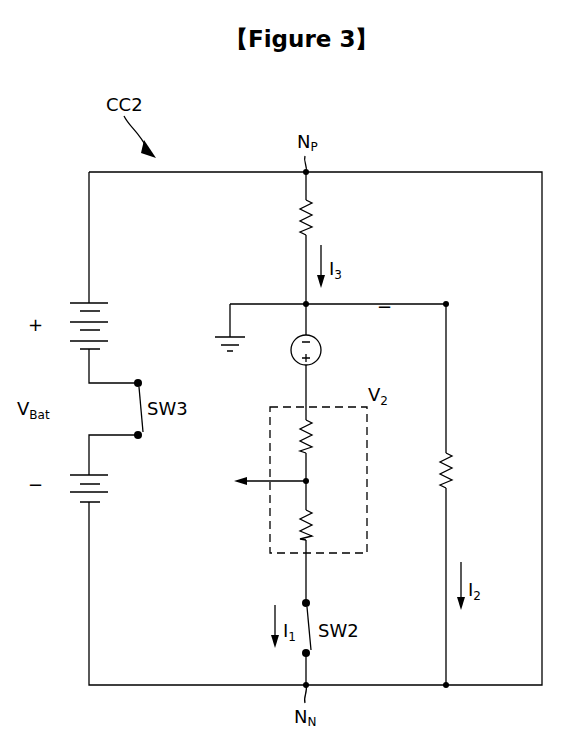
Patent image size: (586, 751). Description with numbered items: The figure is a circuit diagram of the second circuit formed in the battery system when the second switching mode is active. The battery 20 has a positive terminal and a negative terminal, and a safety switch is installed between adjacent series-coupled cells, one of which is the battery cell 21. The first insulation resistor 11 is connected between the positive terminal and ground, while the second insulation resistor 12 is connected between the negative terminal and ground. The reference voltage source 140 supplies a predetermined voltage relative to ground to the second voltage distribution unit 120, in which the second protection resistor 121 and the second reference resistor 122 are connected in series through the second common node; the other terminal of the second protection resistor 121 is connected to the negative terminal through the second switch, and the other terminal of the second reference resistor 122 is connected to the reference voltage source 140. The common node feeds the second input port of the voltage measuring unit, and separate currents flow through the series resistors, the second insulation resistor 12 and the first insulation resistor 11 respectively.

The first insulation resistor 11 is at (300, 220).
The second insulation resistor 12 is at (440, 480).
The battery 20 is at (133, 318).
The battery cell 21 is at (105, 493).
The second voltage distribution unit 120 is at (314, 480).
The second protection resistor 121 is at (300, 528).
The second reference resistor 122 is at (300, 440).
The reference voltage source 140 is at (293, 358).